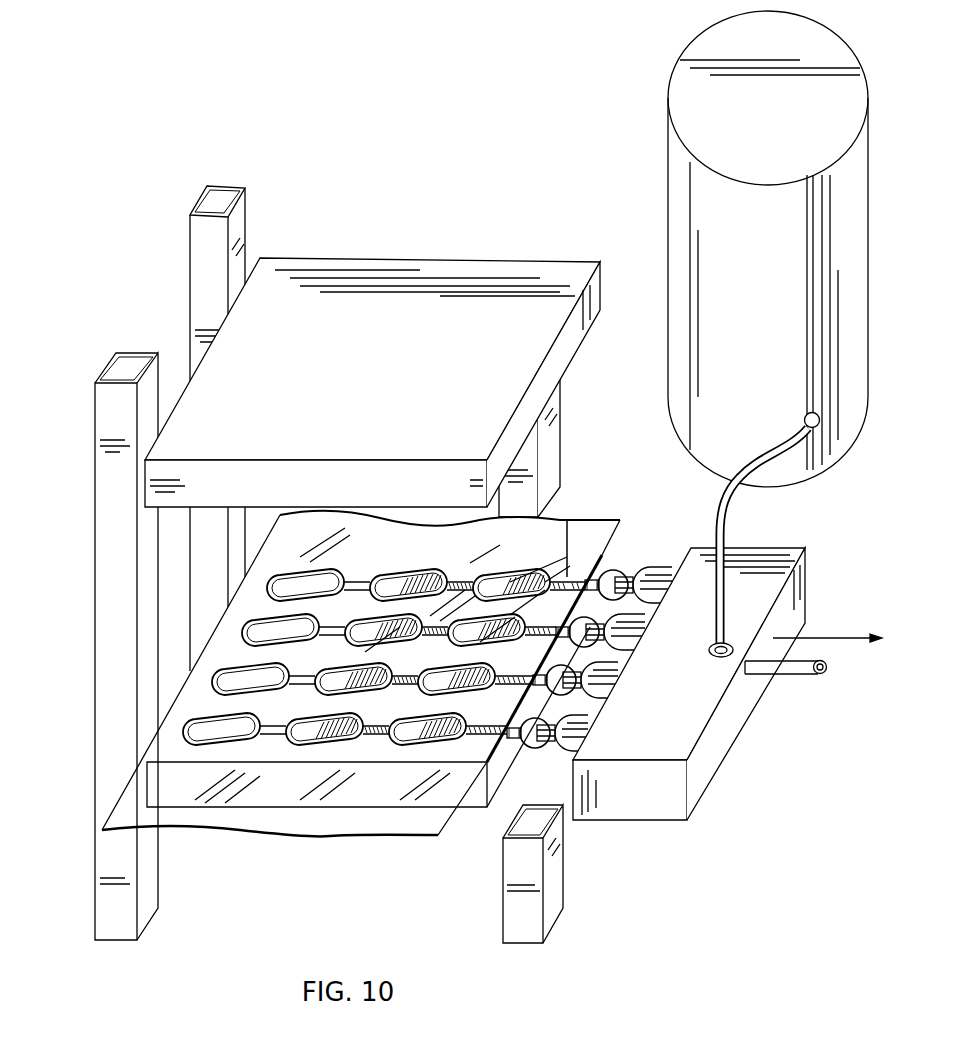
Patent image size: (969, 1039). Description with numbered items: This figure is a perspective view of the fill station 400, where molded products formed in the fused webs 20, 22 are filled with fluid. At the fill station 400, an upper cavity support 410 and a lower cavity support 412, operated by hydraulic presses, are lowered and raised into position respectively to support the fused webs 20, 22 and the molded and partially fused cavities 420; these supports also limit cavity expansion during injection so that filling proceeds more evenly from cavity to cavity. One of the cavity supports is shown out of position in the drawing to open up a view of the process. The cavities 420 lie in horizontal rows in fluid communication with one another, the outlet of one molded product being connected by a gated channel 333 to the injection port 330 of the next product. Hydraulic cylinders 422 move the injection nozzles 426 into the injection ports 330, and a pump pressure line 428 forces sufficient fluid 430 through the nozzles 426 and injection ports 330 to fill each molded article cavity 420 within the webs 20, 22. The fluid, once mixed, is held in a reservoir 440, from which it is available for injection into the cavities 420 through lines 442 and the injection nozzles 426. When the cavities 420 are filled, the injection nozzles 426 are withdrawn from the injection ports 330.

The fill station 400 is at (153, 312).
The upper cavity support 410 is at (160, 490).
The lower cavity support 412 is at (170, 790).
The fused web 20 is at (361, 691).
The fused web 22 is at (358, 835).
The injection port 330 is at (567, 520).
The molded article cavity 420 is at (308, 713).
The gated channel 333 is at (309, 720).
The fluid 430 is at (405, 742).
The hydraulic cylinder 422 is at (598, 592).
The injection nozzle 426 is at (596, 630).
The pump pressure line 428 is at (782, 672).
The reservoir 440 is at (692, 197).
The line 442 is at (737, 490).